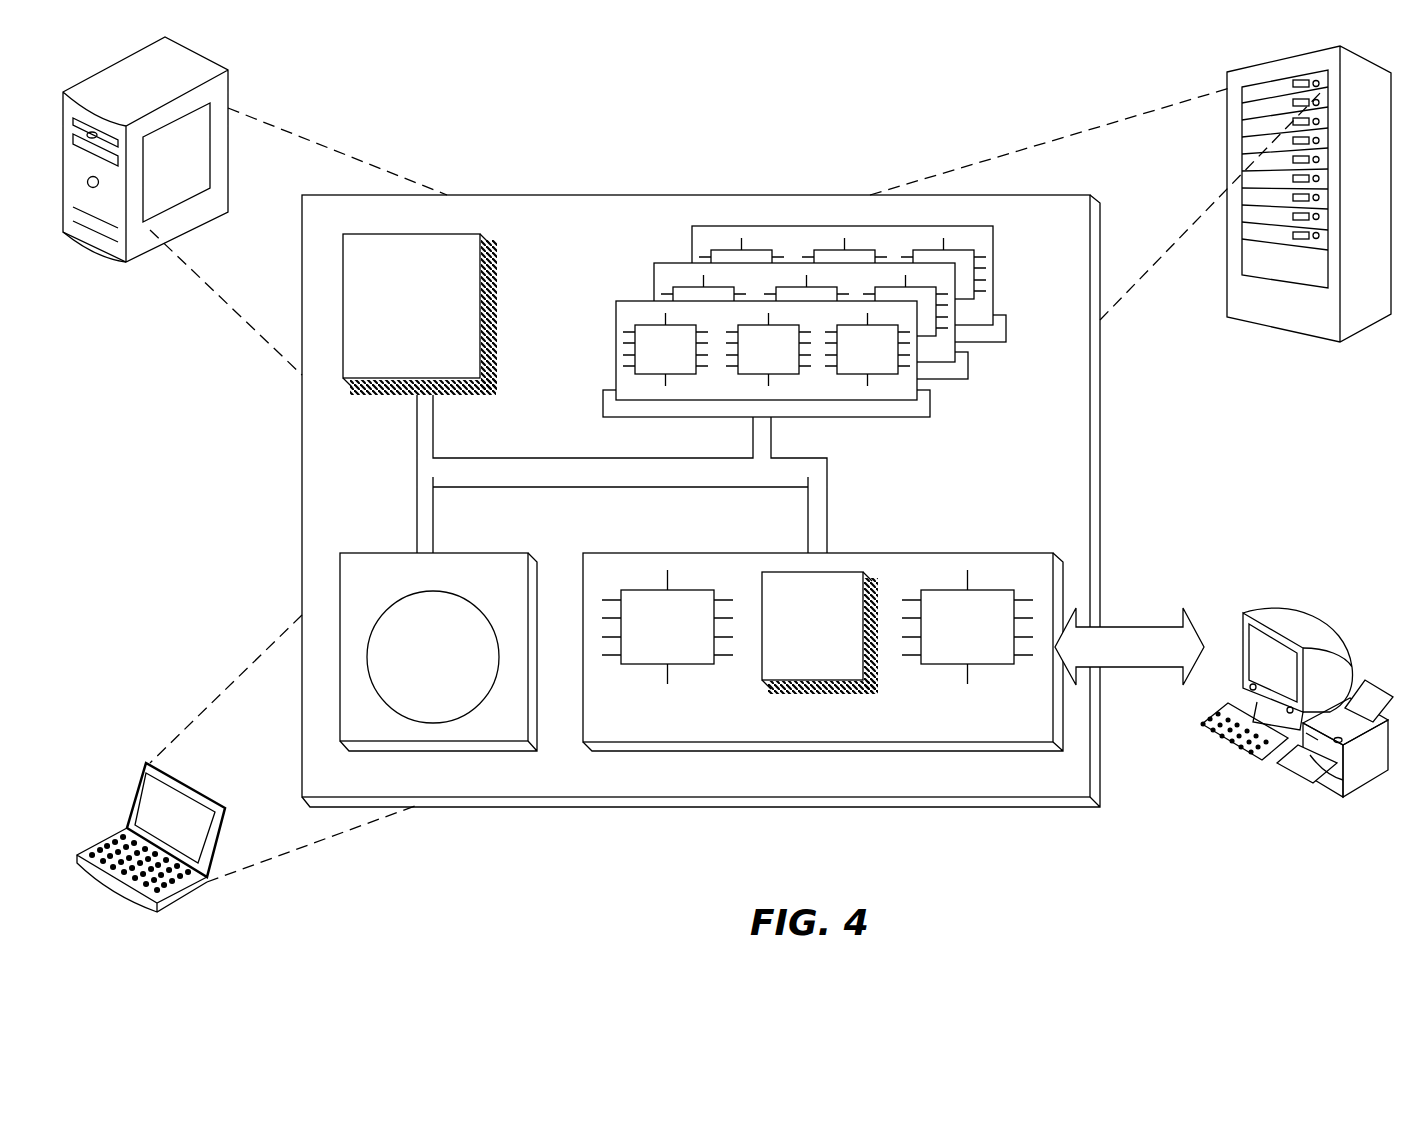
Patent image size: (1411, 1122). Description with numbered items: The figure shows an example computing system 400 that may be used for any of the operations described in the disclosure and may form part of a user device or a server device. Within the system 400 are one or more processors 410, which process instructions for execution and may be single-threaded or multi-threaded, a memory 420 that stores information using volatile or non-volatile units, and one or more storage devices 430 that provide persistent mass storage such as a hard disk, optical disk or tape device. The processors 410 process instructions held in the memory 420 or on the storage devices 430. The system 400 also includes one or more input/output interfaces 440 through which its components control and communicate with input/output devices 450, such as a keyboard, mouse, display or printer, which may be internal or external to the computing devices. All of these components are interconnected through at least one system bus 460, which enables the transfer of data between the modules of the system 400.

The computing system 400 is at (512, 113).
The processor 410 is at (470, 371).
The memory 420 is at (998, 377).
The storage device 430 is at (517, 732).
The input/output interface 440 is at (901, 731).
The input/output device 450 is at (1242, 618).
The system bus 460 is at (617, 477).